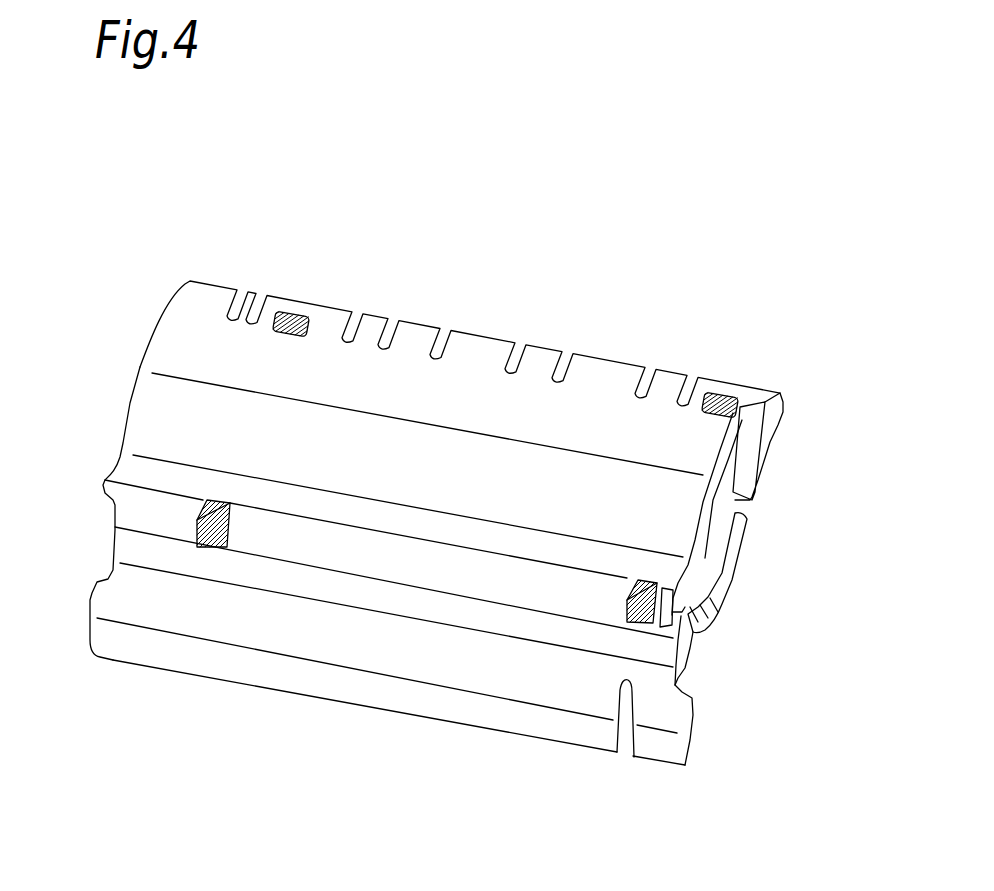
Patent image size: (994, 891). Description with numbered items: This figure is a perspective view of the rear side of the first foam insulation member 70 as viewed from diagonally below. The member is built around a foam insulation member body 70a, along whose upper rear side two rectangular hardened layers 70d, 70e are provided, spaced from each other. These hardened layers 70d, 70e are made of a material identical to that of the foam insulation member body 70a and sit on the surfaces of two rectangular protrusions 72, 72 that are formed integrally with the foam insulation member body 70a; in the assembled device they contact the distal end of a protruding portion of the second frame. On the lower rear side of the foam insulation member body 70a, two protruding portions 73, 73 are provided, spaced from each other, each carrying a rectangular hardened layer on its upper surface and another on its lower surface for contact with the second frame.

The first foam insulation member 70 is at (573, 323).
The foam insulation member body 70a is at (653, 522).
The hardened layer 70d is at (293, 318).
The hardened layer 70e is at (722, 393).
The protrusion 72 is at (283, 315).
The protruding portion 73 is at (205, 498).